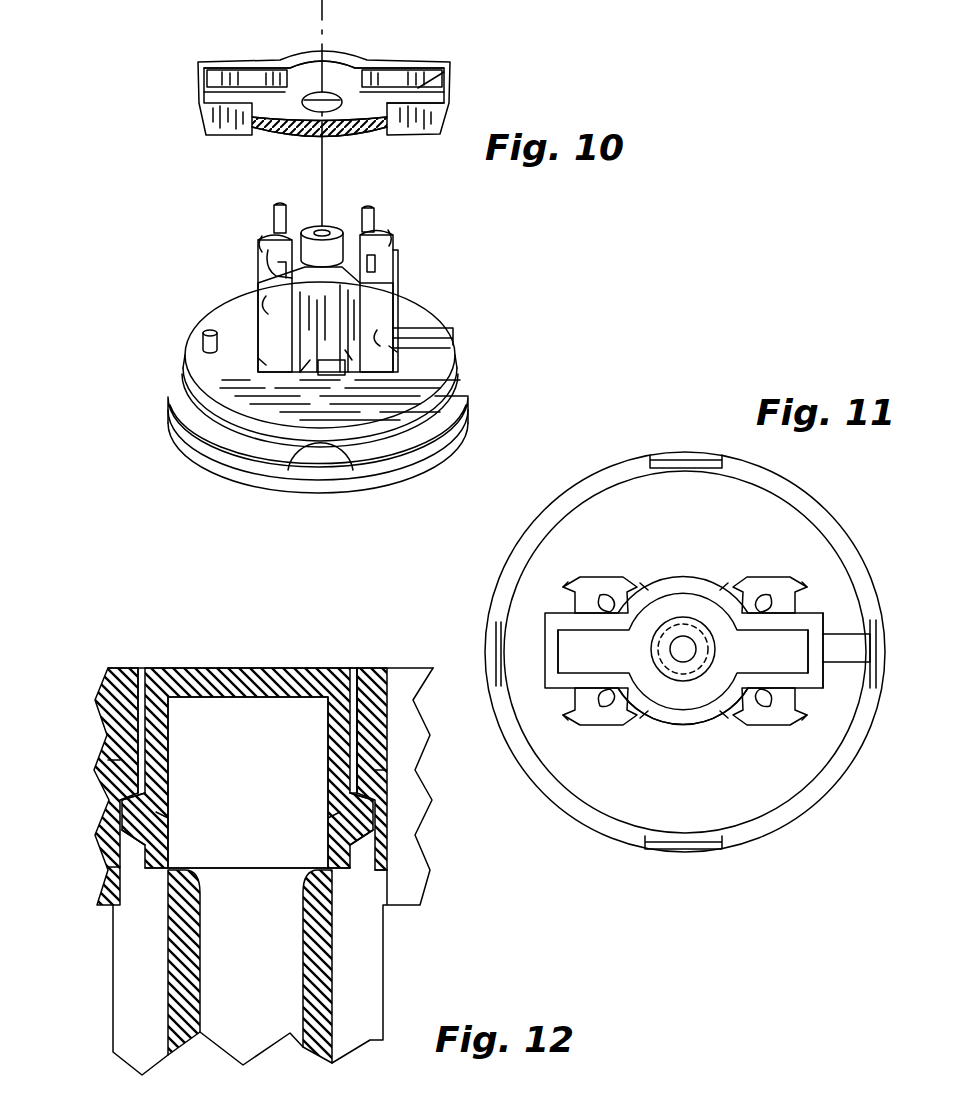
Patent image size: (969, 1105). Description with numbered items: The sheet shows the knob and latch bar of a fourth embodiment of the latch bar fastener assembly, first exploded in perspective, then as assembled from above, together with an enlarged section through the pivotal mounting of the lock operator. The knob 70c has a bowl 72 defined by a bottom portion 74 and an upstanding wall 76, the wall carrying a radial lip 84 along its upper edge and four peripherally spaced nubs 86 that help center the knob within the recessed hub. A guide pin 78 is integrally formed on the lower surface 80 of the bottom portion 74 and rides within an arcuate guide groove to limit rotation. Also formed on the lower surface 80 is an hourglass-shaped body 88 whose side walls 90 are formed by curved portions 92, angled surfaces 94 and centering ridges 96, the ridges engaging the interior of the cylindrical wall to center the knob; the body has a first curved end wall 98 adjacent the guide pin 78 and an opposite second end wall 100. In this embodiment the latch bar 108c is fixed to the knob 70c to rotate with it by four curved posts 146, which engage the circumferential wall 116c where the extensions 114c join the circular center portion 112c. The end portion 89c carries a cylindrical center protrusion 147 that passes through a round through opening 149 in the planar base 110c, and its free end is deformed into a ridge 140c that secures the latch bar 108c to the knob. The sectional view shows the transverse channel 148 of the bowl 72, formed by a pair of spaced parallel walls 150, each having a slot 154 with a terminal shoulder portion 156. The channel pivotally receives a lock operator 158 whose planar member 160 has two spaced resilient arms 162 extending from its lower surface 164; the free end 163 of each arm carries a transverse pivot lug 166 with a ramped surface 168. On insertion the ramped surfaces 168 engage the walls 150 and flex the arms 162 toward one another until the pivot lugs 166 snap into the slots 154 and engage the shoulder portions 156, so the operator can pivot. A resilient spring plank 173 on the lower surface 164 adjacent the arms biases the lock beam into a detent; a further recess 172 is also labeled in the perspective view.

In FIG. 10, the knob 70c is at (333, 339).
In FIG. 11, the knob 70c is at (686, 652).
In FIG. 10, the bowl 72 is at (340, 359).
In FIG. 10, the bottom portion 74 is at (458, 355).
In FIG. 10, the upstanding wall 76 is at (299, 432).
In FIG. 10, the guide pin 78 is at (175, 332).
In FIG. 10, the lower surface 80 is at (344, 343).
In FIG. 11, the lower surface 80 is at (685, 621).
In FIG. 10, the radial lip 84 is at (336, 451).
In FIG. 11, the radial lip 84 is at (685, 637).
In FIG. 10, the nubs 86 is at (328, 488).
In FIG. 11, the nubs 86 is at (679, 652).
In FIG. 10, the body 88 is at (243, 284).
In FIG. 11, the body 88 is at (605, 617).
In FIG. 10, the end portion 89c is at (425, 287).
In FIG. 11, the end portion 89c is at (771, 622).
In FIG. 10, the side walls 90 is at (357, 307).
In FIG. 10, the curved portions 92 is at (338, 376).
In FIG. 10, the angled surfaces 94 is at (317, 388).
In FIG. 11, the angled surfaces 94 is at (691, 647).
In FIG. 10, the centering ridges 96 is at (328, 277).
In FIG. 11, the centering ridges 96 is at (682, 661).
In FIG. 10, the first curved end wall 98 is at (243, 252).
In FIG. 10, the second end wall 100 is at (441, 297).
In FIG. 10, the latch bar 108c is at (366, 68).
In FIG. 11, the latch bar 108c is at (720, 669).
In FIG. 10, the planar base 110c is at (324, 53).
In FIG. 11, the planar base 110c is at (861, 598).
In FIG. 10, the circular center portion 112c is at (319, 68).
In FIG. 11, the circular center portion 112c is at (683, 745).
In FIG. 10, the extensions 114c is at (365, 48).
In FIG. 11, the extensions 114c is at (719, 684).
In FIG. 10, the circumferential wall 116c is at (354, 75).
In FIG. 11, the circumferential wall 116c is at (853, 705).
In FIG. 11, the ridge 140c is at (718, 649).
In FIG. 10, the curved posts 146 is at (315, 245).
In FIG. 11, the curved posts 146 is at (678, 654).
In FIG. 10, the cylindrical center protrusion 147 is at (313, 218).
In FIG. 12, the transverse channel 148 is at (380, 703).
In FIG. 10, the round through opening 149 is at (352, 56).
In FIG. 12, the walls 150 is at (255, 844).
In FIG. 12, the slot 154 is at (265, 816).
In FIG. 12, the terminal shoulder portion 156 is at (252, 767).
In FIG. 12, the lock operator 158 is at (275, 836).
In FIG. 12, the planar member 160 is at (247, 740).
In FIG. 12, the resilient arms 162 is at (267, 721).
In FIG. 12, the free end 163 is at (249, 822).
In FIG. 12, the lower surface 164 is at (248, 782).
In FIG. 12, the pivot lug 166 is at (316, 787).
In FIG. 12, the ramped surface 168 is at (257, 868).
In FIG. 10, the recess 172 is at (464, 326).
In FIG. 12, the resilient spring plank 173 is at (195, 966).